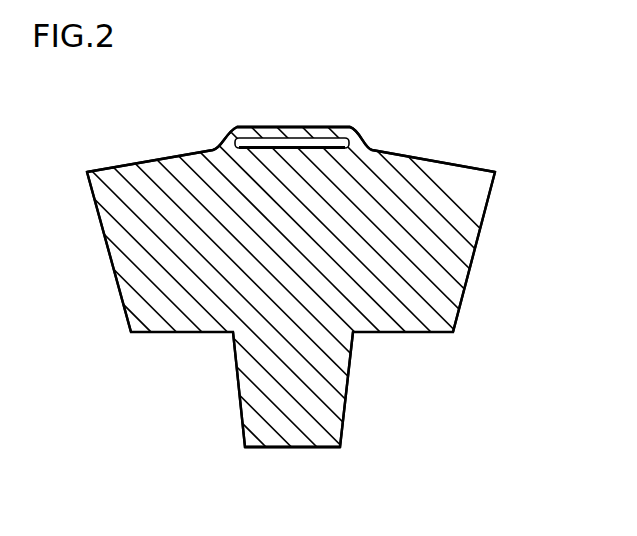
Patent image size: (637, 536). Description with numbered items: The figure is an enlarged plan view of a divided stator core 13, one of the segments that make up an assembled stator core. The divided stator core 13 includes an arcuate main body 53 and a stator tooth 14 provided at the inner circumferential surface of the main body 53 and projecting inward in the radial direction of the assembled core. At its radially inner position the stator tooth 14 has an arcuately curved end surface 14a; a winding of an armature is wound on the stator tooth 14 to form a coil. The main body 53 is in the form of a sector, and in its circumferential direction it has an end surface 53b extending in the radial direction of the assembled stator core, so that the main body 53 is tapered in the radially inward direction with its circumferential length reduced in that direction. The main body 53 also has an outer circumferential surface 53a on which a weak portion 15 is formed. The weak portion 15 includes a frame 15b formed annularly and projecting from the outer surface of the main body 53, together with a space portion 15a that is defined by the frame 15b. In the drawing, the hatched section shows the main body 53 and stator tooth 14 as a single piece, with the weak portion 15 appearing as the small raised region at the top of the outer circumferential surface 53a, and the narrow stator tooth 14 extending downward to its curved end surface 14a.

The divided stator core 13 is at (438, 255).
The stator tooth 14 is at (348, 385).
The end surface 14a is at (293, 448).
The weak portion 15 is at (268, 127).
The space portion 15a is at (317, 141).
The frame 15b is at (250, 128).
The main body 53 is at (162, 190).
The outer circumferential surface 53a is at (430, 158).
The end surface 53b is at (111, 261).